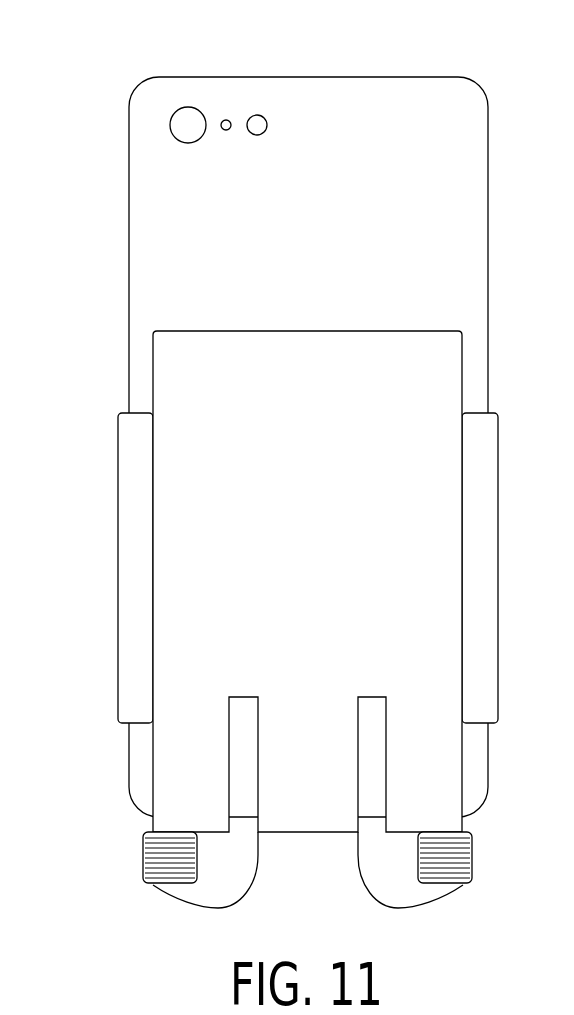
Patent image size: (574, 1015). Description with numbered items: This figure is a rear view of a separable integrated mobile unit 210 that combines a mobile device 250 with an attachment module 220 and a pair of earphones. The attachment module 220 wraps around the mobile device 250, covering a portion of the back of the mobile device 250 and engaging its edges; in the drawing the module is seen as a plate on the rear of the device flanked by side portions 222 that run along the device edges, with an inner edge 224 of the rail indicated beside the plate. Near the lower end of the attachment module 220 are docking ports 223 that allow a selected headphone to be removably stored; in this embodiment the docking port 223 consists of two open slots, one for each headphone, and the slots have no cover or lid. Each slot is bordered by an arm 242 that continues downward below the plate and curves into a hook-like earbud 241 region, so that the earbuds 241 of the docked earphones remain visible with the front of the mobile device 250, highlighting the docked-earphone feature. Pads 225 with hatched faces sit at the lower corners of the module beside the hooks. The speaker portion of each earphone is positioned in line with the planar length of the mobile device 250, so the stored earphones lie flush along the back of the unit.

The separable integrated mobile unit 210 is at (308, 411).
The mobile device 250 is at (428, 106).
The attachment module 220 is at (251, 580).
The side rails 222 is at (117, 474).
The rail inner edge 224 is at (151, 524).
The docking port 223 is at (228, 710).
The retention arm 242 is at (257, 849).
The earbud 241 is at (215, 882).
The grip pad 225 is at (146, 853).